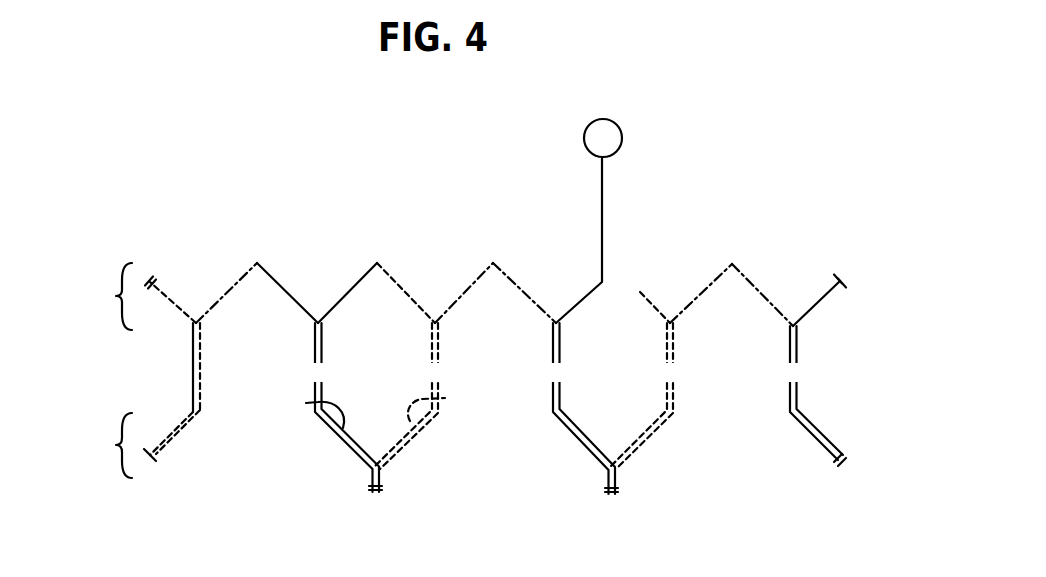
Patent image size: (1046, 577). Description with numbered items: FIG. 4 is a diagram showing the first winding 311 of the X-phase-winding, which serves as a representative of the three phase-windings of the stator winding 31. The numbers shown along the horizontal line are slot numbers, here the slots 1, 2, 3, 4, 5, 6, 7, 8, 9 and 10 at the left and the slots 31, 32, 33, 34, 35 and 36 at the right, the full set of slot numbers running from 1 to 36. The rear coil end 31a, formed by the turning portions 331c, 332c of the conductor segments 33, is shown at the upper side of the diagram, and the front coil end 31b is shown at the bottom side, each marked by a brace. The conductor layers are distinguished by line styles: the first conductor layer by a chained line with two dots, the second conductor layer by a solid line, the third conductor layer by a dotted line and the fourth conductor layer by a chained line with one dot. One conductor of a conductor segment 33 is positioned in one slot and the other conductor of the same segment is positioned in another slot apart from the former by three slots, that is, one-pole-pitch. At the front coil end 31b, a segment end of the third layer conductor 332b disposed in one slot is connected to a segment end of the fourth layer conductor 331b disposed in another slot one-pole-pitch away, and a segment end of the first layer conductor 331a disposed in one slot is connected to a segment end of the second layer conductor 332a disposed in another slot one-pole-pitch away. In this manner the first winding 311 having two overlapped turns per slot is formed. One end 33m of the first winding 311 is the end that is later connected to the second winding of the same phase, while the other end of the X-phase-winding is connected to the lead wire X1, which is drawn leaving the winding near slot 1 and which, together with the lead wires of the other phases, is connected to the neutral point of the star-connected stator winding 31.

The slot number 1 is at (583, 326).
The slot number 2 is at (515, 373).
The slot number 3 is at (475, 373).
The slot number 4 is at (408, 366).
The slot number 5 is at (397, 373).
The slot number 6 is at (357, 373).
The slot number 7 is at (319, 377).
The slot number 8 is at (277, 373).
The slot number 9 is at (237, 373).
The slot number 10 is at (195, 367).
The slot number 31 is at (812, 371).
The slot number 32 is at (750, 373).
The slot number 33 is at (710, 373).
The slot number 34 is at (648, 380).
The slot number 35 is at (631, 373).
The slot number 36 is at (594, 373).
The rear coil end 31a is at (136, 296).
The front coil end 31b is at (138, 444).
The first winding 311 is at (741, 250).
The first layer conductor 331a is at (413, 430).
The fourth layer conductor 331b is at (347, 427).
The turning portion 331c is at (257, 263).
The second layer conductor 332a is at (306, 403).
The third layer conductor 332b is at (445, 398).
The turning portion 332c is at (377, 263).
The end of first winding 33m is at (641, 293).
The lead wire X1 is at (603, 138).